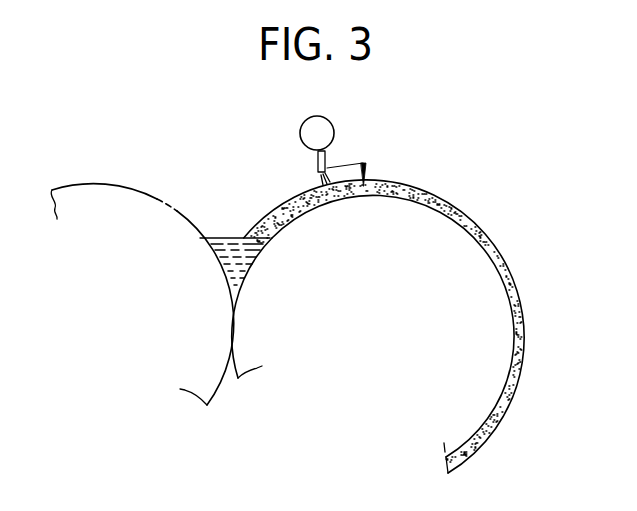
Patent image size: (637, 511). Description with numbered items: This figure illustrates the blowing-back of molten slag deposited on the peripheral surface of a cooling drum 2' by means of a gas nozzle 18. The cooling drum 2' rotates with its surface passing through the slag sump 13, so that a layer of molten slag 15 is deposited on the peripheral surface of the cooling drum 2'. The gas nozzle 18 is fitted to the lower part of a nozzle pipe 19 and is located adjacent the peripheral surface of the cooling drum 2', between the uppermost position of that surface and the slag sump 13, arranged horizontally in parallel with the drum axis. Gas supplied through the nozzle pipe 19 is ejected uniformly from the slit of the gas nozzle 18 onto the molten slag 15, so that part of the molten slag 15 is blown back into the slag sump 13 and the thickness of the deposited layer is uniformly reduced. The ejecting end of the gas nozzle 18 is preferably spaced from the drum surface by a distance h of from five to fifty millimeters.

The cooling drum 2' is at (316, 286).
The slag sump 13 is at (222, 247).
The molten slag 15 is at (237, 238).
The gas nozzle 18 is at (326, 160).
The nozzle pipe 19 is at (326, 119).